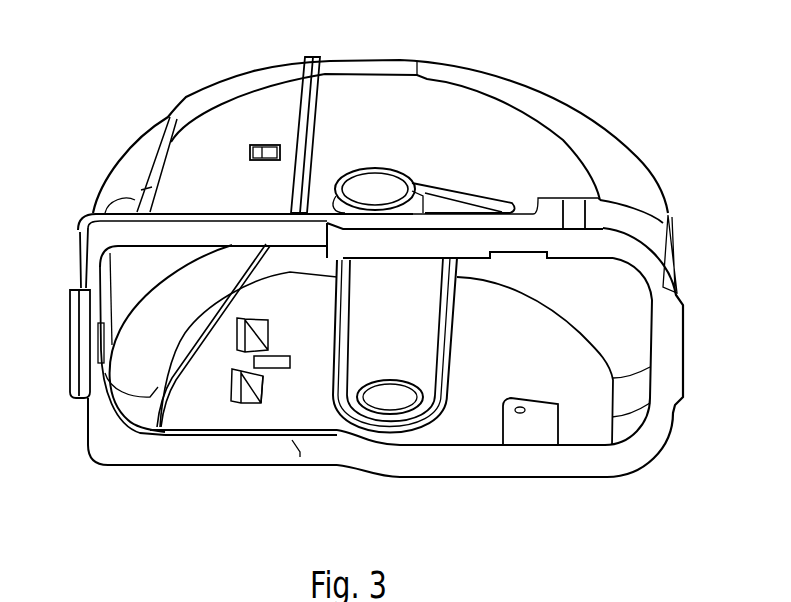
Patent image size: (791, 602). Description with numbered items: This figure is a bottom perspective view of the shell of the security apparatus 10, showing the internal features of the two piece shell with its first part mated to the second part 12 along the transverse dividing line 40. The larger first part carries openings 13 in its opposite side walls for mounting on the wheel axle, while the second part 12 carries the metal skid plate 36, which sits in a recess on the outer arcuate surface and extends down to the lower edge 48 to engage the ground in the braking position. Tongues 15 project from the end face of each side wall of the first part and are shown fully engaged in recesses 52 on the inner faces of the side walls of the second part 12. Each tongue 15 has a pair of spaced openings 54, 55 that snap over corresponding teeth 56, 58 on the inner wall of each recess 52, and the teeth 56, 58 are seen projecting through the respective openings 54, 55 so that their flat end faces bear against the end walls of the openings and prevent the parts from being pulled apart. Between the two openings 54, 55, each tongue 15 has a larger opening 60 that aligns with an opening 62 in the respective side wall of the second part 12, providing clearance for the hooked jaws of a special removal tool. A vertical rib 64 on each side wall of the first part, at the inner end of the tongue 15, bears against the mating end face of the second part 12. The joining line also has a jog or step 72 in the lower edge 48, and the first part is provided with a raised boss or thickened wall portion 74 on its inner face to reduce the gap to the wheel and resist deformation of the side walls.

The security apparatus 10 is at (563, 172).
The second part 12 is at (231, 124).
The openings 13 is at (383, 190).
The tongues 15 is at (213, 393).
The metal skid plate 36 is at (72, 352).
The transverse dividing line 40 is at (297, 117).
The lower edge 48 is at (474, 447).
The recesses 52 is at (172, 383).
The opening 54 is at (250, 338).
The opening 55 is at (263, 380).
The tooth 56 is at (215, 350).
The tooth 58 is at (257, 397).
The opening 60 is at (283, 367).
The opening 62 is at (268, 145).
The vertical rib 64 is at (303, 147).
The jog or step 72 is at (285, 233).
The raised boss 74 is at (425, 463).